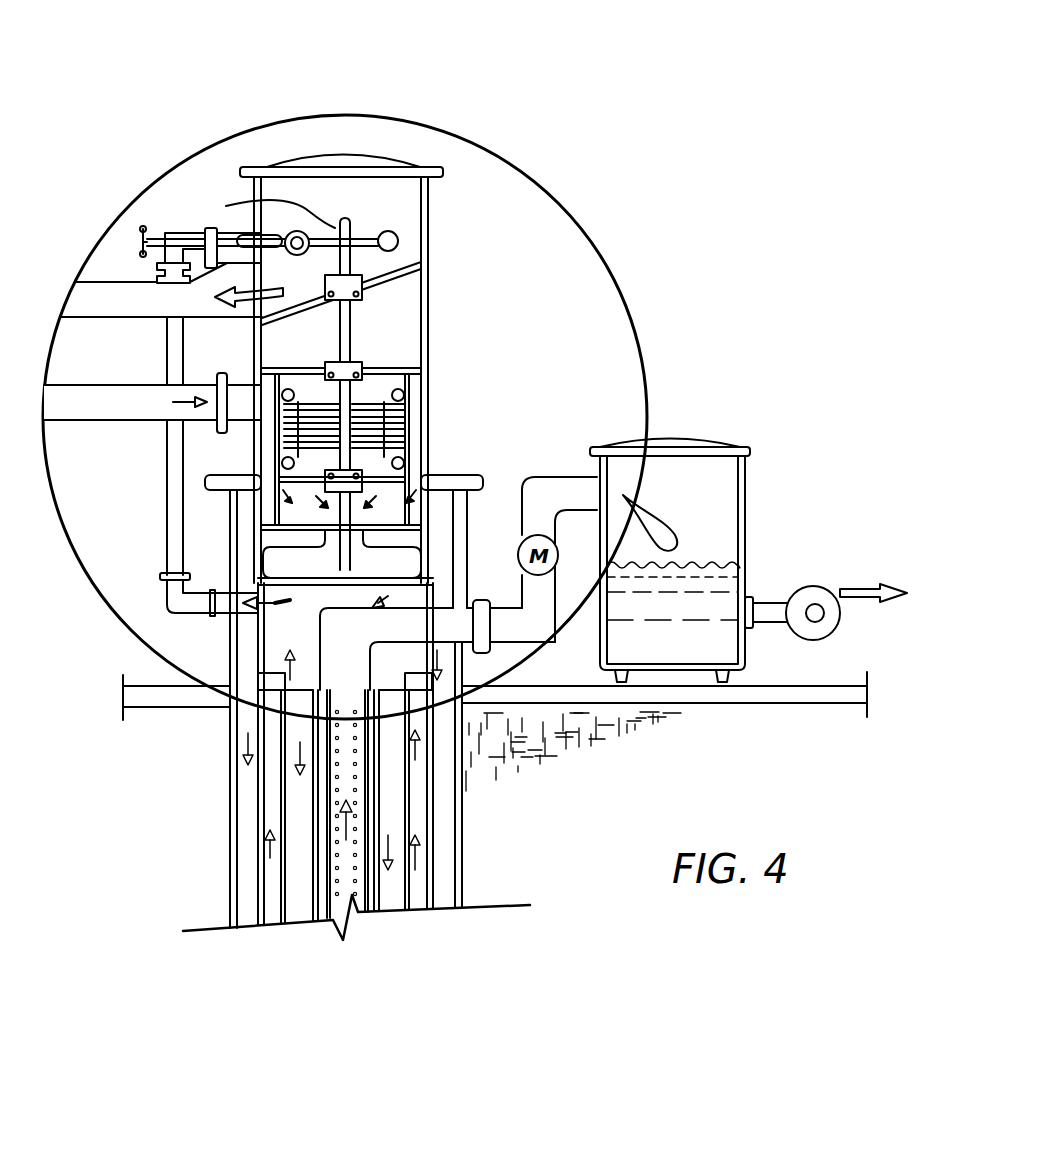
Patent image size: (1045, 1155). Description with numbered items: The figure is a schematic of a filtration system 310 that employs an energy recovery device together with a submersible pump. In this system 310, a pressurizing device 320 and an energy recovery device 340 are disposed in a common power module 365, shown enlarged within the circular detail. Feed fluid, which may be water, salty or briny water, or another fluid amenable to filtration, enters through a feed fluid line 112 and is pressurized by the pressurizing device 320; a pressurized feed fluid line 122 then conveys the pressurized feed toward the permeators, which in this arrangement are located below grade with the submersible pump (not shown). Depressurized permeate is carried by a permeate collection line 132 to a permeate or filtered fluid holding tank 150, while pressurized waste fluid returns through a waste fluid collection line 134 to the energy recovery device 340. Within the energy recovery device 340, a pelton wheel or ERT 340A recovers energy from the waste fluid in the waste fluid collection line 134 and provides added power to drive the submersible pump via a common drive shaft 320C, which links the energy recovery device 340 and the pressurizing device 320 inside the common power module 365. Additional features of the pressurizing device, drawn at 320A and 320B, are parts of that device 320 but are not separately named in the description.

The filtration system 310 is at (665, 152).
The common power module 365 is at (621, 293).
The energy recovery device 340 is at (450, 165).
The pelton wheel or ERT 340A is at (388, 229).
The common drive shaft 320C is at (226, 205).
The feed fluid line 112 is at (140, 383).
The heat exchanger coil 320A is at (280, 437).
The pressurizing device 320 is at (467, 577).
The collection tray / return pipe 320B is at (280, 557).
The waste fluid collection line 134 is at (160, 555).
The permeate or filtered fluid holding tank 150 is at (736, 440).
The feed fluid line 122 is at (247, 791).
The permeate collection line 132 is at (355, 897).